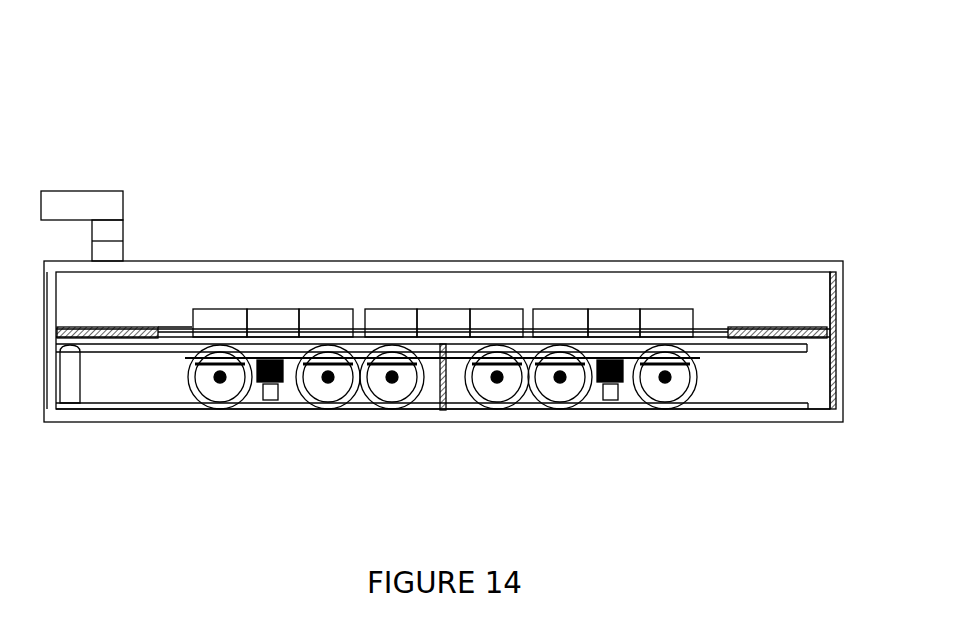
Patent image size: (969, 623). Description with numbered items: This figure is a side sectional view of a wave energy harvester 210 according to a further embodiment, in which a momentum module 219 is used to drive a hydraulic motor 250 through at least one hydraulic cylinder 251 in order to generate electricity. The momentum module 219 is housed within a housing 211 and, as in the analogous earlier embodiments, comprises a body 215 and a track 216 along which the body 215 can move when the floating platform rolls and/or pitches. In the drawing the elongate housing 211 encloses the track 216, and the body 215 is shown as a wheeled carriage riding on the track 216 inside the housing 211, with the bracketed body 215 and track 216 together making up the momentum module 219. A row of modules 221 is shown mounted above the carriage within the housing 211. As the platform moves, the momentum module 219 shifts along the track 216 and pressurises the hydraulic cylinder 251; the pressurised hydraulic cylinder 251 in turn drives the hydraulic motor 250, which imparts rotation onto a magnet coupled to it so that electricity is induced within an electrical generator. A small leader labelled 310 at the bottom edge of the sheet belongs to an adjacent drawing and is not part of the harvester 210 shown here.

The wave energy harvester 210 is at (618, 103).
The housing 211 is at (203, 261).
The body 215 is at (331, 380).
The track 216 is at (165, 409).
The momentum module 219 is at (397, 510).
The modules 221 is at (318, 309).
The hydraulic motor 250 is at (777, 325).
The hydraulic cylinder 251 is at (711, 325).
The adjacent figure element 310 is at (673, 622).